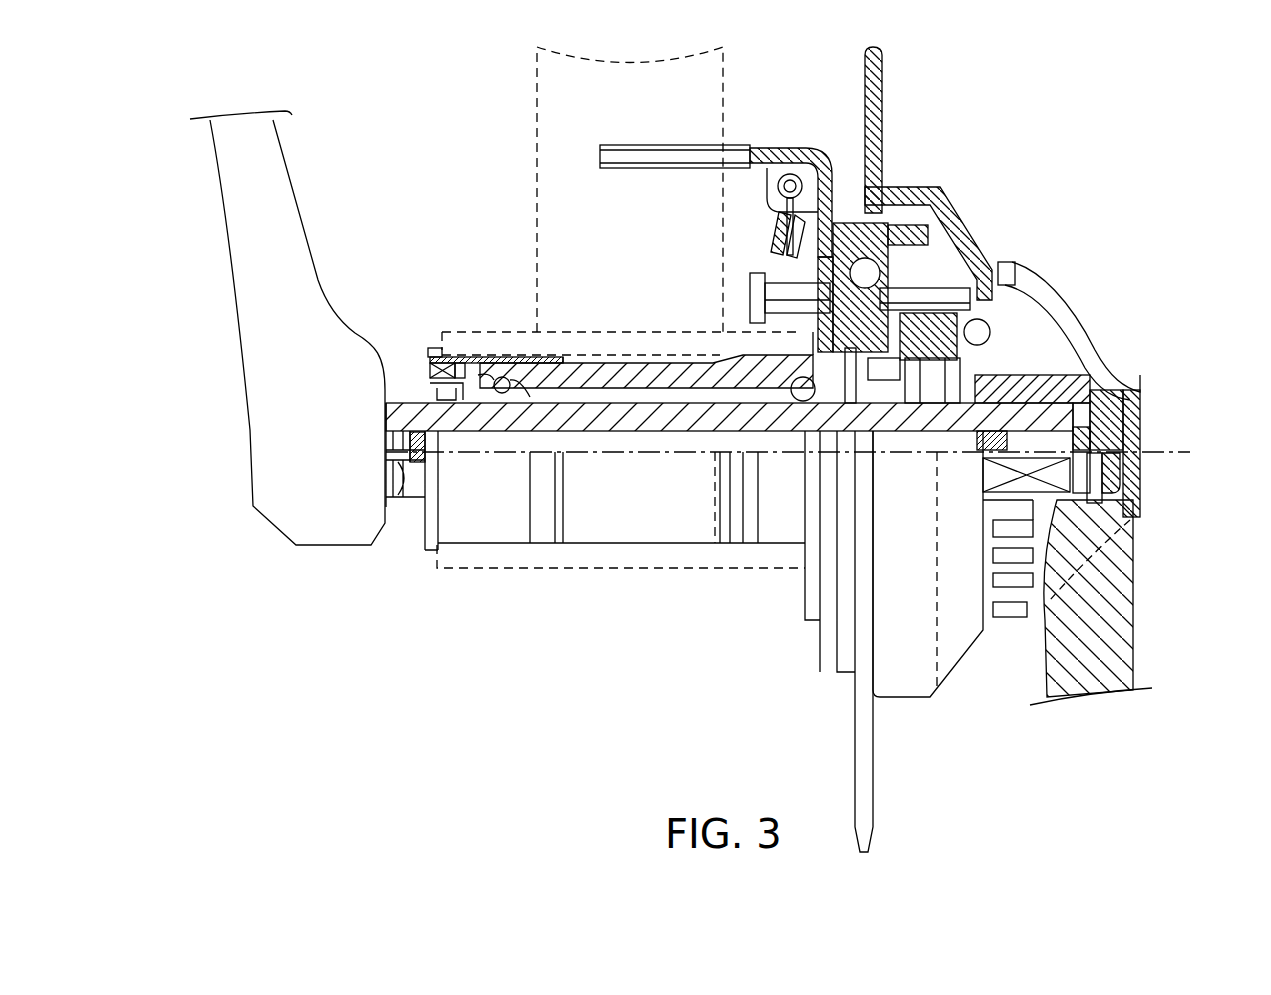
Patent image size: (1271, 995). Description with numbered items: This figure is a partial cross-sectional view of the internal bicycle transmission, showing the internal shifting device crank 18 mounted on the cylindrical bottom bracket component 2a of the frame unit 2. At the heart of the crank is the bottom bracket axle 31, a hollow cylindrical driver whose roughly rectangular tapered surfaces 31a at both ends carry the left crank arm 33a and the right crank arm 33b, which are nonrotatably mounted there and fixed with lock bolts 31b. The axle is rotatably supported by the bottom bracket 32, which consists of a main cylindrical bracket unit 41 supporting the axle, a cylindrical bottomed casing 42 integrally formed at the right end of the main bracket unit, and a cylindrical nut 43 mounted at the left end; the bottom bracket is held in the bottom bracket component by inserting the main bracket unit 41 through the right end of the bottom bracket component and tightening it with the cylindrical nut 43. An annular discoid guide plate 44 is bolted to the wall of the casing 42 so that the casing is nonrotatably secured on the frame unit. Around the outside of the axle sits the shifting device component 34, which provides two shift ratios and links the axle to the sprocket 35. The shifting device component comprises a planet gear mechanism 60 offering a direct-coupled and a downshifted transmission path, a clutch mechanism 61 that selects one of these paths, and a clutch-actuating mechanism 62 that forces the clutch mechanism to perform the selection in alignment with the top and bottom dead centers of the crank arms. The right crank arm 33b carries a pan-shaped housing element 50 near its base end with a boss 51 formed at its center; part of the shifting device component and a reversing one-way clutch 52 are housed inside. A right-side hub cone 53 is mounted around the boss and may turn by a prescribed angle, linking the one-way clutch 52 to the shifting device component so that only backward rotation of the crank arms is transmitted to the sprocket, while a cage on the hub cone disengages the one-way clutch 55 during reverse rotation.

The frame unit 2 is at (533, 130).
The bottom bracket component 2a is at (487, 570).
The internal shifting device crank 18 is at (478, 262).
The bottom bracket axle 31 is at (668, 433).
The tapered surfaces 31a is at (1053, 520).
The lock bolts 31b is at (1140, 383).
The bottom bracket 32 is at (610, 512).
The left crank arm 33a is at (340, 531).
The right crank arm 33b is at (1123, 577).
The shifting device component 34 is at (947, 250).
The sprocket 35 is at (884, 100).
The main cylindrical bracket unit 41 is at (643, 362).
The casing 42 is at (858, 223).
The cylindrical nut 43 is at (432, 348).
The guide plate 44 is at (777, 145).
The housing element 50 is at (1053, 296).
The boss 51 is at (1037, 393).
The reversing one-way clutch 52 is at (1043, 283).
The right-side hub cone 53 is at (1008, 285).
The one-way clutch 55 is at (936, 395).
The planet gear mechanism 60 is at (932, 232).
The clutch mechanism 61 is at (866, 390).
The clutch-actuating mechanism 62 is at (787, 262).